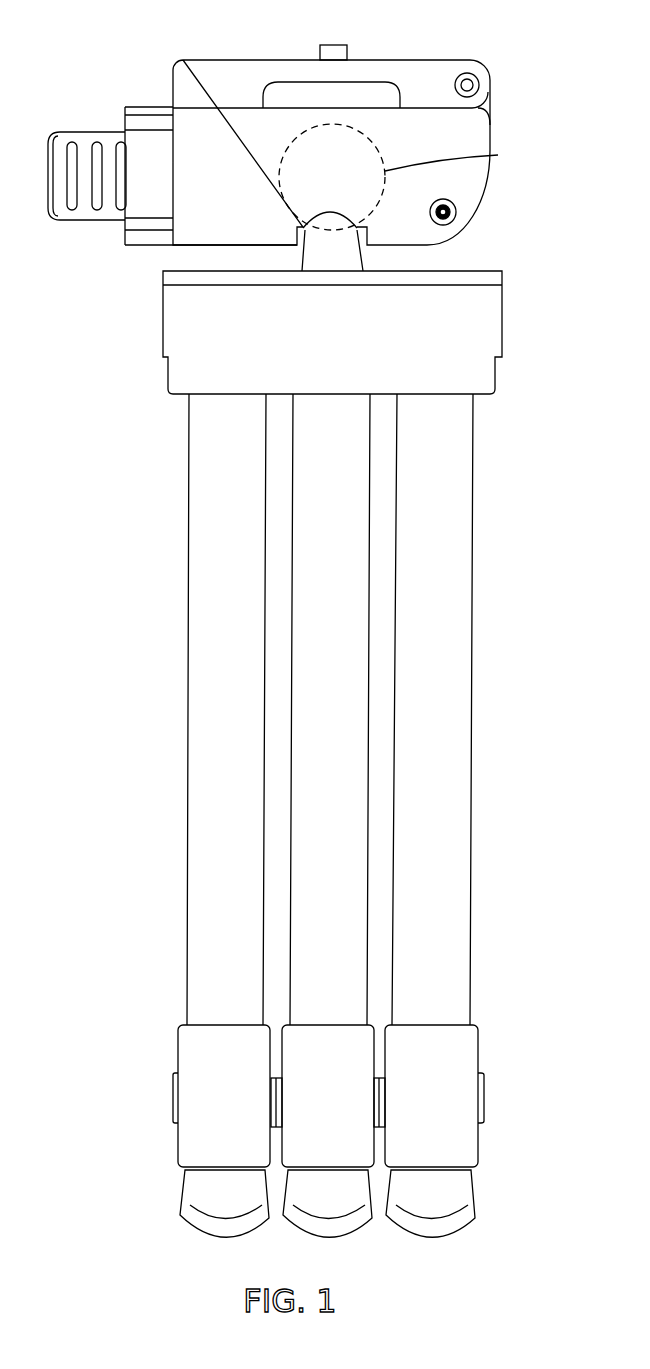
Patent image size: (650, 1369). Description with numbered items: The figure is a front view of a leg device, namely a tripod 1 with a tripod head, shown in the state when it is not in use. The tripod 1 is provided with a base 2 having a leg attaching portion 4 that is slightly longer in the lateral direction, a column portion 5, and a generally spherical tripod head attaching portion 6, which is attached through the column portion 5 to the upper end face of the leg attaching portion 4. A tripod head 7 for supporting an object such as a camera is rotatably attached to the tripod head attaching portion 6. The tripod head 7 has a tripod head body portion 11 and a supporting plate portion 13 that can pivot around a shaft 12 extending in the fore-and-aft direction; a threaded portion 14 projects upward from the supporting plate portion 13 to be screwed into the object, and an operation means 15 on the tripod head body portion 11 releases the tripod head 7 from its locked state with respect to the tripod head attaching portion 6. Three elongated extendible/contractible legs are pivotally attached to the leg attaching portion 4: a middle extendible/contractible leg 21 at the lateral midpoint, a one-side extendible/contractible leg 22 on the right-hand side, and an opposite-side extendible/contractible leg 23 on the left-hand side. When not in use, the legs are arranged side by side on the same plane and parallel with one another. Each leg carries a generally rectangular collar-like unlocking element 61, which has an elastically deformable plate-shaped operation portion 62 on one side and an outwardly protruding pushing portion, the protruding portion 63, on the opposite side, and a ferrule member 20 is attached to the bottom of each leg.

The tripod 1 is at (302, 636).
The base 2 is at (335, 741).
The leg attaching portion 4 is at (483, 321).
The column portion 5 is at (342, 250).
The tripod head attaching portion 6 is at (398, 177).
The tripod head 7 is at (288, 135).
The tripod head body portion 11 is at (473, 181).
The shaft 12 is at (479, 80).
The supporting plate portion 13 is at (421, 66).
The threaded portion 14 is at (334, 45).
The operation means 15 is at (87, 212).
The ferrule member 20 is at (227, 1207).
The middle extendible/contractible leg 21 is at (372, 588).
The one-side extendible/contractible leg 22 is at (475, 472).
The opposite-side extendible/contractible leg 23 is at (183, 665).
The unlocking element 61 is at (198, 1058).
The operation portion 62 is at (173, 1097).
The protruding portion 63 is at (274, 1080).